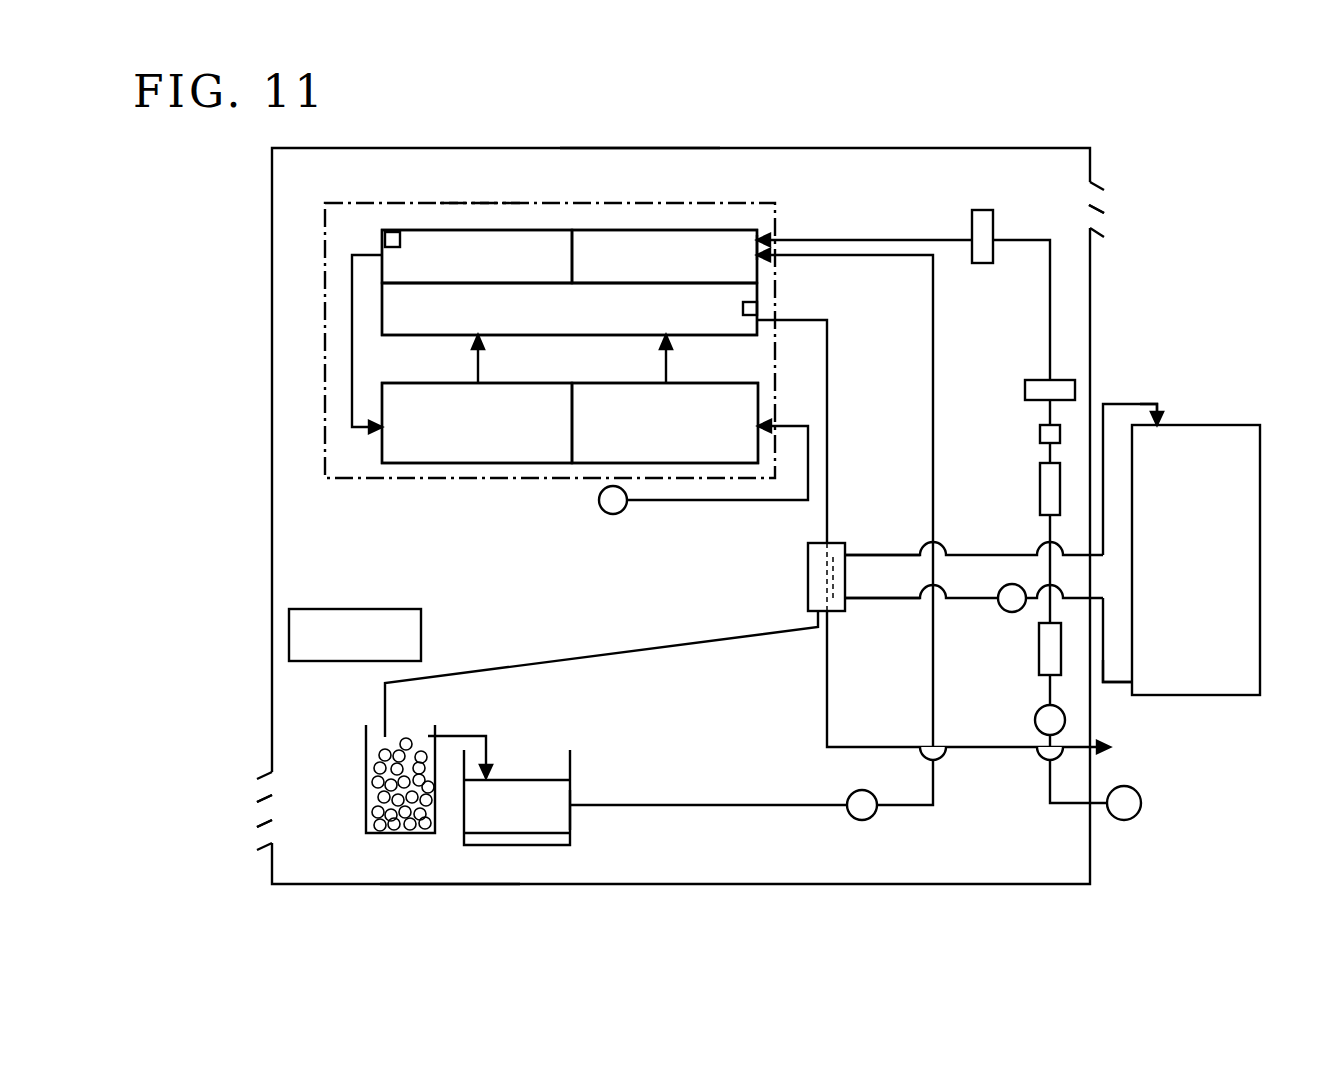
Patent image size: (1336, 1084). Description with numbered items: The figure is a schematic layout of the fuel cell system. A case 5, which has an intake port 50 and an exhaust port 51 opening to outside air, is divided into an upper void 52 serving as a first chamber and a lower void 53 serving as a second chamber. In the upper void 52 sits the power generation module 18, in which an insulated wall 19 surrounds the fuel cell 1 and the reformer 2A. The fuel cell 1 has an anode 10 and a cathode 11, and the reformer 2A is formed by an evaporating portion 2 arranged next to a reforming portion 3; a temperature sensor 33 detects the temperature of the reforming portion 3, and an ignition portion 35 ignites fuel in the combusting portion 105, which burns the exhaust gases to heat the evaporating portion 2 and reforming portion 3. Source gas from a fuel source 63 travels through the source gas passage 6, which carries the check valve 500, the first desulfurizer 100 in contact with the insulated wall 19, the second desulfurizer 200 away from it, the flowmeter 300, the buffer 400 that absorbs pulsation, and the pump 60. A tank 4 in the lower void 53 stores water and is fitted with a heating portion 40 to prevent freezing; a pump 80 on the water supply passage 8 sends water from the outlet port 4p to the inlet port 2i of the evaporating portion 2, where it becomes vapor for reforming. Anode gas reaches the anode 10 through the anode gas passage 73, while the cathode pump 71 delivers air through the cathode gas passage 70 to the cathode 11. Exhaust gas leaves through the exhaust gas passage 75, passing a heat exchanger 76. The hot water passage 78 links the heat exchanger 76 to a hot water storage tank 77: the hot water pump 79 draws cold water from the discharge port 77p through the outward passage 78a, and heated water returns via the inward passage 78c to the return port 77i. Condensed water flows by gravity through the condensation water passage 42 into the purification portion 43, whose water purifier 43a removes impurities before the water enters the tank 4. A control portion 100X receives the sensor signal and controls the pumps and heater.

The fuel cell 1 is at (588, 383).
The evaporating portion 2 is at (712, 232).
The reformer 2A is at (532, 228).
The inlet port 2i is at (760, 255).
The reforming portion 3 is at (467, 230).
The tank 4 is at (572, 780).
The outlet port 4p is at (572, 812).
The case 5 is at (272, 558).
The source gas passage 6 is at (1025, 238).
The water supply passage 8 is at (934, 393).
The anode 10 is at (477, 423).
The cathode 11 is at (665, 423).
The power generation module 18 is at (467, 202).
The insulated wall 19 is at (403, 203).
The temperature sensor 33 is at (392, 238).
The ignition portion 35 is at (757, 308).
The heating portion 40 is at (512, 835).
The condensation water passage 42 is at (610, 655).
The purification portion 43 is at (366, 790).
The water purifier 43a is at (372, 822).
The intake port 50 is at (262, 787).
The exhaust port 51 is at (1105, 214).
The upper void 52 is at (636, 168).
The lower void 53 is at (447, 885).
The pump 60 is at (1066, 720).
The fuel source 63 is at (1130, 820).
The cathode gas passage 70 is at (718, 502).
The cathode pump 71 is at (620, 512).
The anode gas passage 73 is at (352, 385).
The exhaust gas passage 75 is at (829, 712).
The heat exchanger 76 is at (848, 612).
The hot water storage tank 77 is at (1200, 428).
The return port 77i is at (1157, 428).
The discharge port 77p is at (1132, 682).
The hot water passage 78 is at (902, 600).
The outward passage 78a is at (915, 600).
The inward passage 78c is at (1005, 555).
The hot water pump 79 is at (1005, 612).
The pump 80 is at (873, 792).
The first desulfurizer 100 is at (1038, 655).
The control portion 100X is at (335, 609).
The combusting portion 105 is at (556, 340).
The second desulfurizer 200 is at (1040, 468).
The flowmeter 300 is at (1062, 434).
The buffer 400 is at (1076, 390).
The check valve 500 is at (983, 210).